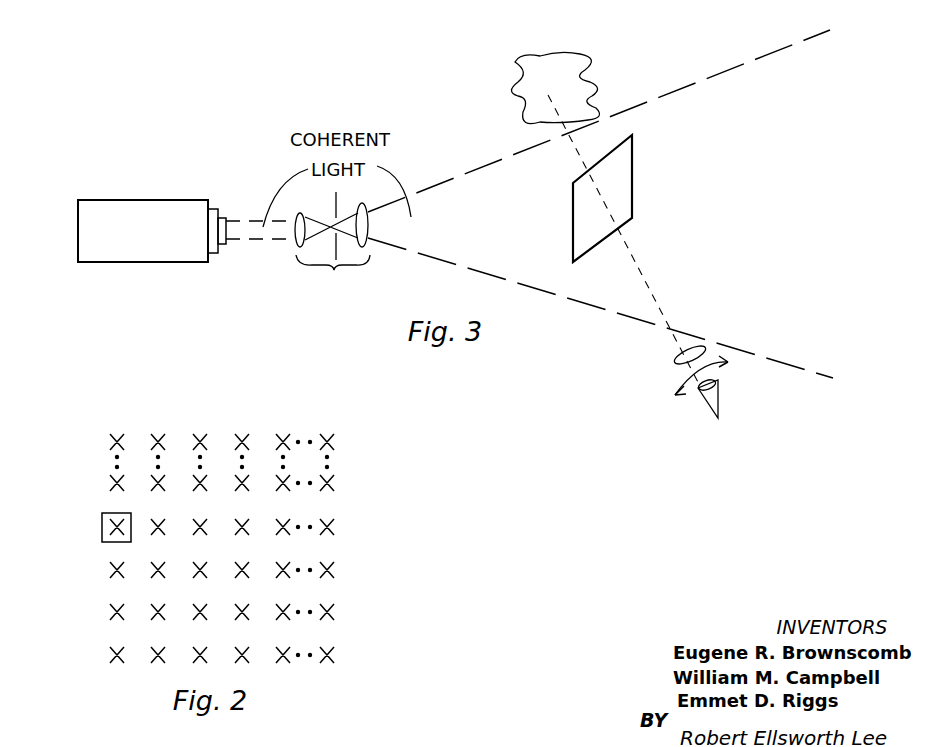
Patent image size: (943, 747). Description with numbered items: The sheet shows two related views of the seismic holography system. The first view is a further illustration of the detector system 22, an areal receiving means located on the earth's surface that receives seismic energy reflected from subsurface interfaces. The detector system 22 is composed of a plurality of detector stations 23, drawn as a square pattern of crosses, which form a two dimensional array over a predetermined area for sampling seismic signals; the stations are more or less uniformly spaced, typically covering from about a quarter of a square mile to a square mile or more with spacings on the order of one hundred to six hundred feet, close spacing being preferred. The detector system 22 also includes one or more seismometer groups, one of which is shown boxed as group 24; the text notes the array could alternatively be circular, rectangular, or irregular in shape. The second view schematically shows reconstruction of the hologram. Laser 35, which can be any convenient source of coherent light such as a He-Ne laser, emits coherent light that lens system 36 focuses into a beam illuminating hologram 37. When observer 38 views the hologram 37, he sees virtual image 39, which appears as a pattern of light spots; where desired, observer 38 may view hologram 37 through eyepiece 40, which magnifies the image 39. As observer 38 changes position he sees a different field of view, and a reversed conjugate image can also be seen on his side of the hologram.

In FIG. 2, the detector system 22 is at (282, 508).
In FIG. 2, the detector stations 23 is at (222, 508).
In FIG. 2, the seismometer group 24 is at (105, 520).
In FIG. 3, the laser 35 is at (185, 231).
In FIG. 3, the lens system 36 is at (332, 244).
In FIG. 3, the hologram 37 is at (620, 182).
In FIG. 3, the observer 38 is at (713, 413).
In FIG. 3, the virtual image 39 is at (530, 70).
In FIG. 3, the eyepiece 40 is at (673, 359).